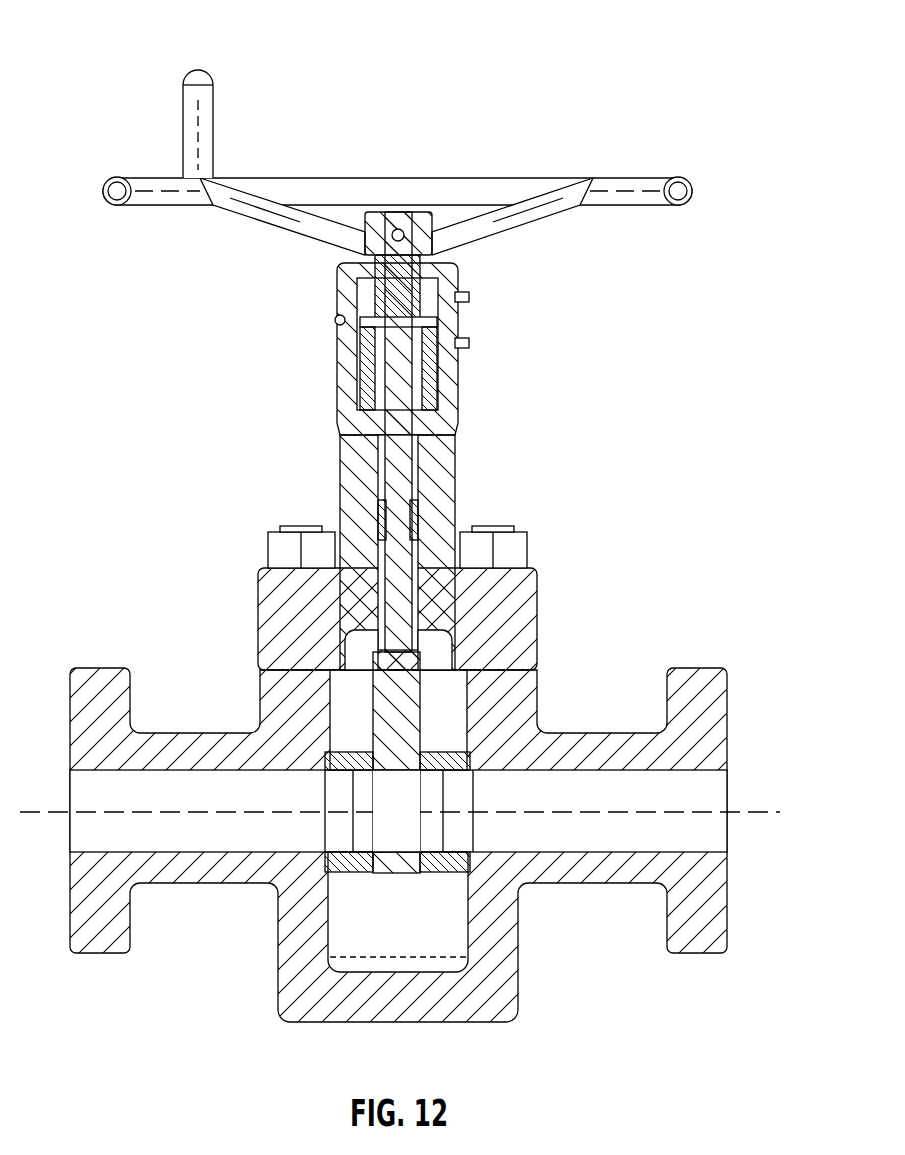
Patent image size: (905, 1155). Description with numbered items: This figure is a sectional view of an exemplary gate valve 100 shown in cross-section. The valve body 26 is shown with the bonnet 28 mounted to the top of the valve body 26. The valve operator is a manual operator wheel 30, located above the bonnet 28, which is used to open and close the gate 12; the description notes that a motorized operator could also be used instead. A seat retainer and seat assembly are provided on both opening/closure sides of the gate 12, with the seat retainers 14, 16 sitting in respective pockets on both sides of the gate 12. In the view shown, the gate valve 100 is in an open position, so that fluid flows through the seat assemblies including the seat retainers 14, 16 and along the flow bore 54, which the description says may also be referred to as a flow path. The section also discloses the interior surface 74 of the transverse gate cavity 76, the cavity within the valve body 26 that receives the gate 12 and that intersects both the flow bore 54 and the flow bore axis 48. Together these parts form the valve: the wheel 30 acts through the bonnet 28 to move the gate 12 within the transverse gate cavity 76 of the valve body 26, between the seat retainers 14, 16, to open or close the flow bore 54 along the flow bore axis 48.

The gate valve 100 is at (124, 46).
The manual operator wheel 30 is at (625, 178).
The bonnet 28 is at (530, 603).
The gate 12 is at (430, 735).
The valve body 26 is at (605, 747).
The seat retainer 14 is at (340, 822).
The seat retainer 16 is at (460, 803).
The flow bore 54 is at (715, 789).
The flow bore axis 48 is at (755, 813).
The interior surface 74 is at (336, 916).
The transverse gate cavity 76 is at (405, 945).